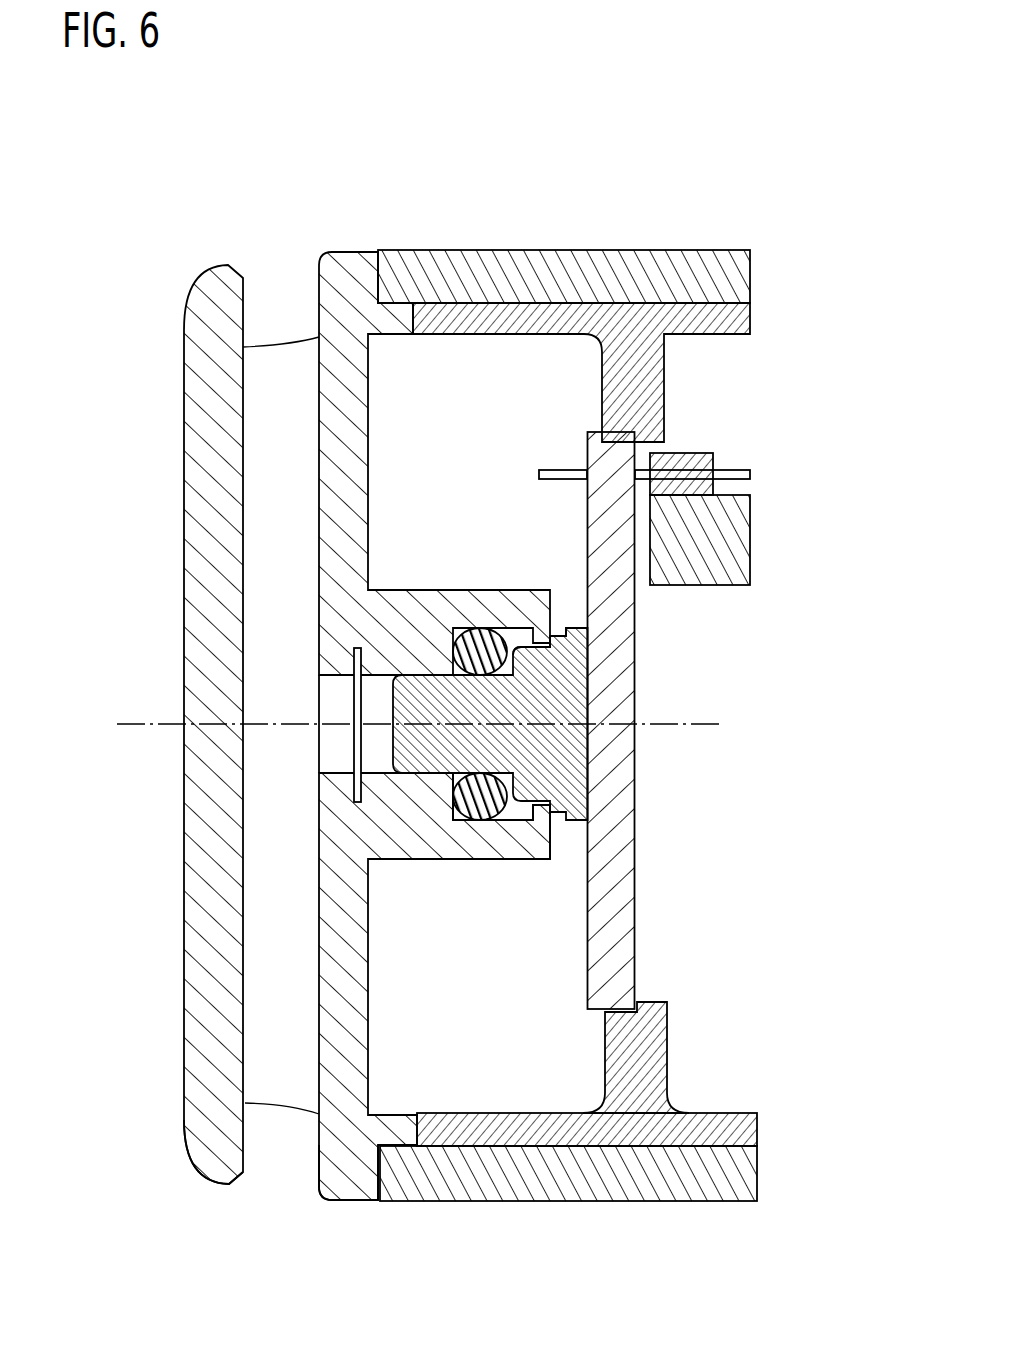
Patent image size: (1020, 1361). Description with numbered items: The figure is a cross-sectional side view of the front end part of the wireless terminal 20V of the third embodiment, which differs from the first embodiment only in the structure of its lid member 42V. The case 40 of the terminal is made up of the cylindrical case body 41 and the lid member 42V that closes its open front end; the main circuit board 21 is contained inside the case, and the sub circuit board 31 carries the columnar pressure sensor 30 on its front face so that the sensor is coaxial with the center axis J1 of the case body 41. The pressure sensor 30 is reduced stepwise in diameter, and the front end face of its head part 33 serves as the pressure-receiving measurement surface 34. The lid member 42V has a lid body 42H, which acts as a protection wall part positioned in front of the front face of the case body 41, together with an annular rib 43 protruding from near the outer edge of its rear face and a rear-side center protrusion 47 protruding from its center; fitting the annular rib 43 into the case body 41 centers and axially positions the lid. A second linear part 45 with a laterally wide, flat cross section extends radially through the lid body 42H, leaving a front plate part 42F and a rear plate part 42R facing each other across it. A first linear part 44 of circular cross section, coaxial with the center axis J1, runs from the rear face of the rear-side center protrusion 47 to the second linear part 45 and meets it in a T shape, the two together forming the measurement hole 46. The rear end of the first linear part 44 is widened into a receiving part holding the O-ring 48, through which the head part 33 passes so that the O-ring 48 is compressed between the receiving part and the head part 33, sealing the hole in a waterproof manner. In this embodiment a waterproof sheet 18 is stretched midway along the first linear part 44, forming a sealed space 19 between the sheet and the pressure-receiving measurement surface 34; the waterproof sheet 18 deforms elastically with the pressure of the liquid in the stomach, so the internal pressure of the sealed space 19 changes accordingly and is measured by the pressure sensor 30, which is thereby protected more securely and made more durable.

The waterproof sheet 18 is at (360, 760).
The sealed space 19 is at (377, 762).
The wireless terminal 20V is at (160, 205).
The main circuit board 21 is at (695, 577).
The pressure sensor 30 is at (535, 750).
The sub circuit board 31 is at (620, 827).
The head part 33 is at (470, 697).
The pressure-receiving measurement surface 34 is at (392, 679).
The case 40 is at (450, 153).
The case body 41 is at (417, 247).
The lid member 42V is at (353, 247).
The lid body 42H is at (217, 1117).
The front plate part 42F is at (238, 1158).
The rear plate part 42R is at (360, 1167).
The annular rib 43 is at (407, 1130).
The first linear part 44 is at (334, 698).
The second linear part 45 is at (283, 400).
The measurement hole 46 is at (277, 193).
The rear-side center protrusion 47 is at (550, 853).
The O-ring 48 is at (497, 822).
The center axis J1 is at (135, 723).